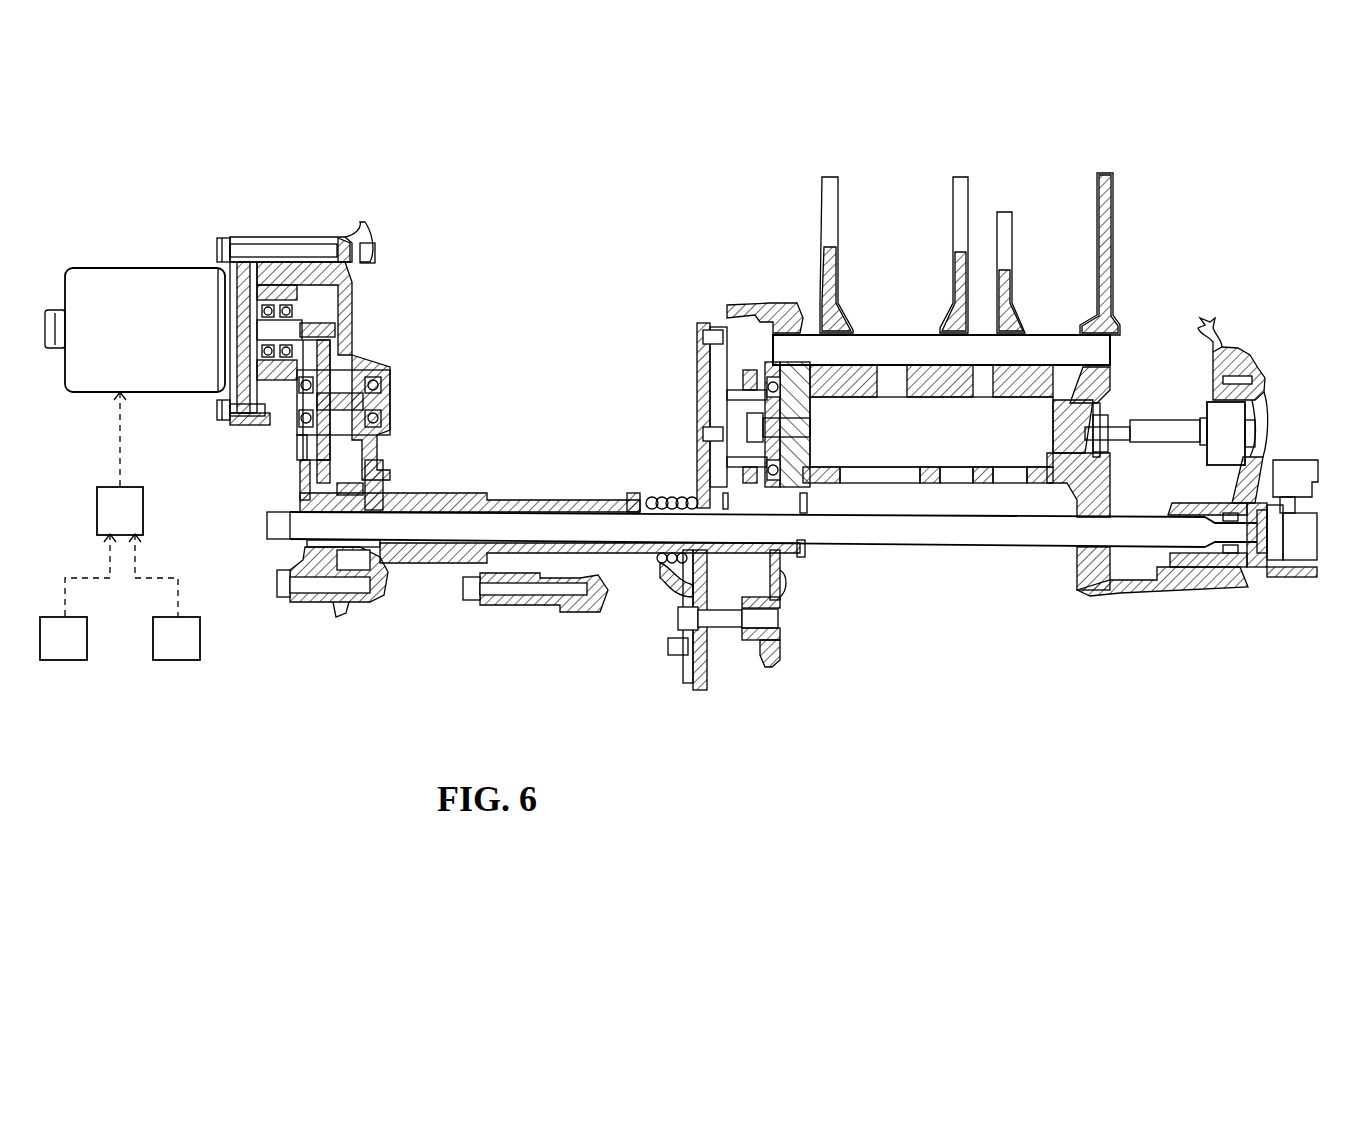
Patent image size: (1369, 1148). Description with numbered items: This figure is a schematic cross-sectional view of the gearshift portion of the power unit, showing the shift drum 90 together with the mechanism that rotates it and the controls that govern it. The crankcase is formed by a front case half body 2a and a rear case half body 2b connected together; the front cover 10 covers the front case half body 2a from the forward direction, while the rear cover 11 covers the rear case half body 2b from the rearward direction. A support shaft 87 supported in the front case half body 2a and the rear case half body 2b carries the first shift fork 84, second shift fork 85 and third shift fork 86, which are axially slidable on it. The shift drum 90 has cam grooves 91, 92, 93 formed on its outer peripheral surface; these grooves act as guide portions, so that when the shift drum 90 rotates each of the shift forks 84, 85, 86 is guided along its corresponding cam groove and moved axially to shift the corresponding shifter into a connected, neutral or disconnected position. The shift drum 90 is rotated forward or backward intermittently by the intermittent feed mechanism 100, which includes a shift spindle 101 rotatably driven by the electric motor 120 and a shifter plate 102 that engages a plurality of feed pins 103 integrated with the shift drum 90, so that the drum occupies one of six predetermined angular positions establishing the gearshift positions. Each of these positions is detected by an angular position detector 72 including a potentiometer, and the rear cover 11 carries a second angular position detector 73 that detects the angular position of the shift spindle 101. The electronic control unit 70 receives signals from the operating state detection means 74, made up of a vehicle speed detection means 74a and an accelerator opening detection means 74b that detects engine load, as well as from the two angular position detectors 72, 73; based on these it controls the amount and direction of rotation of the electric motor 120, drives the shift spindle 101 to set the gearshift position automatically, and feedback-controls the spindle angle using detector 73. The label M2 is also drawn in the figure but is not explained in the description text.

The electric motor 120 is at (148, 296).
The electronic control unit 70 is at (97, 497).
The operating state detection means 74 is at (120, 695).
The vehicle speed detection means 74a is at (73, 660).
The accelerator opening detection means 74b is at (176, 670).
The front cover 10 is at (468, 498).
The intermittent feed mechanism 100 is at (685, 380).
The shifter plate 102 is at (697, 377).
The feed pins 103 is at (697, 467).
The front case half body 2a is at (765, 320).
The rear case half body 2b is at (1103, 285).
The third shift fork 86 is at (823, 260).
The second shift fork 85 is at (953, 258).
The first shift fork 84 is at (1010, 283).
The support shaft 87 is at (892, 340).
The cam groove 93 is at (833, 398).
The cam groove 92 is at (950, 398).
The cam groove 91 is at (1012, 398).
The shift drum 90 is at (934, 499).
The shift spindle 101 is at (1003, 562).
The second motor M2 is at (814, 665).
The rear cover 11 is at (1242, 357).
The angular position detector 72 is at (1230, 417).
The angular position detector 73 is at (1303, 542).